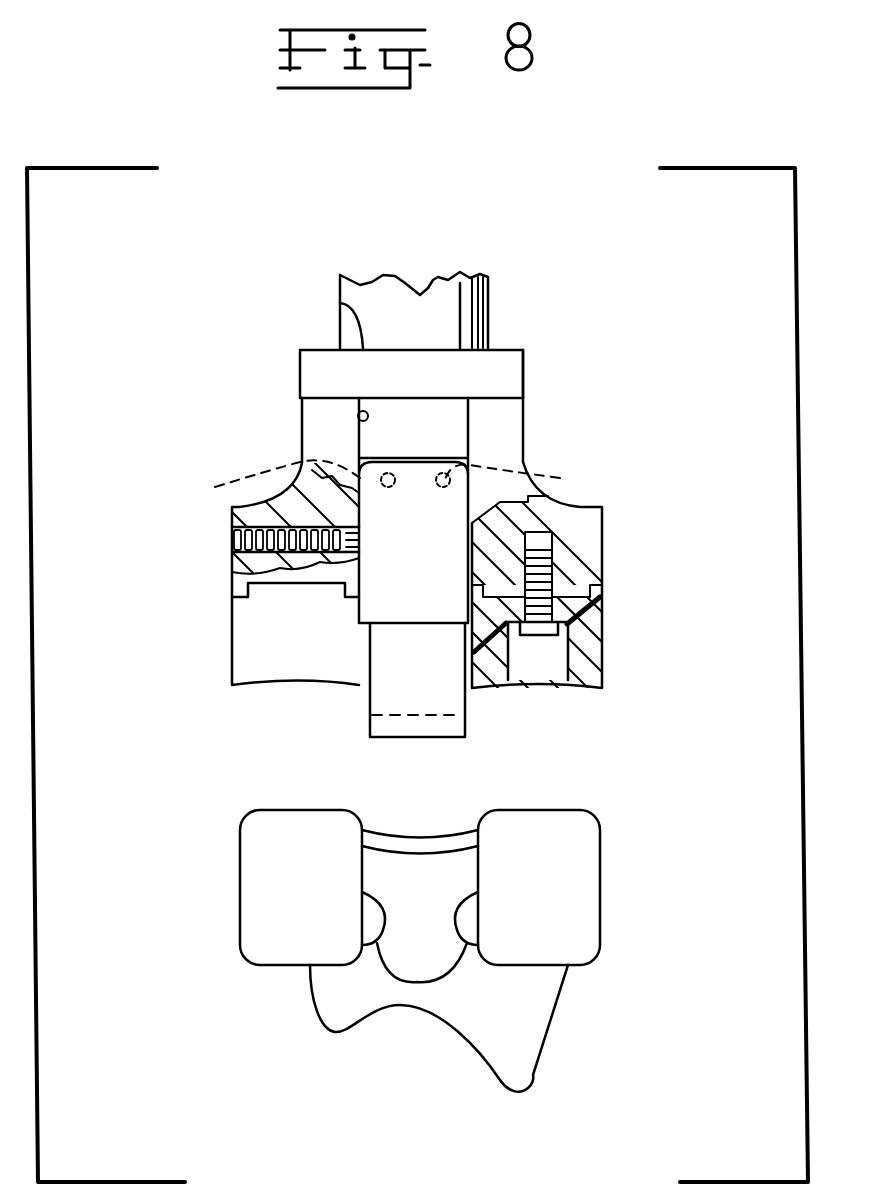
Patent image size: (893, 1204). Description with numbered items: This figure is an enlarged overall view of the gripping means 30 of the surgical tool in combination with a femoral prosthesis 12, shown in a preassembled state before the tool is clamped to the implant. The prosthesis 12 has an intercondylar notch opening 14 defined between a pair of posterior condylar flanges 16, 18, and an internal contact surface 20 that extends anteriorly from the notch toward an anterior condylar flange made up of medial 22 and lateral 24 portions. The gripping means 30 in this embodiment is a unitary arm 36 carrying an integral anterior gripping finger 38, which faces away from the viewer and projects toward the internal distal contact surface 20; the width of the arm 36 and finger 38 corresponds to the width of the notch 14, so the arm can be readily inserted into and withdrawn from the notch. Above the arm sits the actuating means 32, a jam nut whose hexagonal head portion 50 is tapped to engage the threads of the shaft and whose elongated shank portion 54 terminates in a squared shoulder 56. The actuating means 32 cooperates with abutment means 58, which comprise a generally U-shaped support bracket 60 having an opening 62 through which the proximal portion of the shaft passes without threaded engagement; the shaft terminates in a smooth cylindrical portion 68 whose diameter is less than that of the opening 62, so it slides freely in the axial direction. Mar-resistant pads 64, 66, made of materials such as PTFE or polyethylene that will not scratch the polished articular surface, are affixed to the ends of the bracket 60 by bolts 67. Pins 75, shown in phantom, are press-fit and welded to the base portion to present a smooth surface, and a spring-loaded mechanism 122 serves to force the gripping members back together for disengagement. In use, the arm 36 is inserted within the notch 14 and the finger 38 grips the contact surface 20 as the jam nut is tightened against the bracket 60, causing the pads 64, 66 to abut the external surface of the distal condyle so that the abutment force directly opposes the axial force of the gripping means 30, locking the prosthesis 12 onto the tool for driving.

The femoral prosthesis 12 is at (295, 1005).
The intercondylar notch opening 14 is at (436, 878).
The posterior condylar flange 16 is at (233, 928).
The posterior condylar flange 18 is at (568, 890).
The internal contact surface 20 is at (395, 868).
The medial portion 22 is at (340, 1008).
The lateral portion 24 is at (512, 1068).
The gripping means 30 is at (322, 718).
The actuating means 32 is at (250, 373).
The unitary arm 36 is at (447, 703).
The anterior gripping finger 38 is at (445, 737).
The hexagonal head portion 50 is at (433, 279).
The elongated shank portion 54 is at (480, 318).
The squared shoulder 56 is at (340, 303).
The abutment means 58 is at (612, 515).
The U-shaped support bracket 60 is at (524, 378).
The opening 62 is at (358, 412).
The mar-resistant pad 64 is at (600, 650).
The mar-resistant pad 66 is at (243, 630).
The bolt 67 is at (556, 562).
The smooth cylindrical portion 68 is at (478, 418).
The pin 75 is at (384, 481).
The spring-loaded mechanism 122 is at (245, 545).